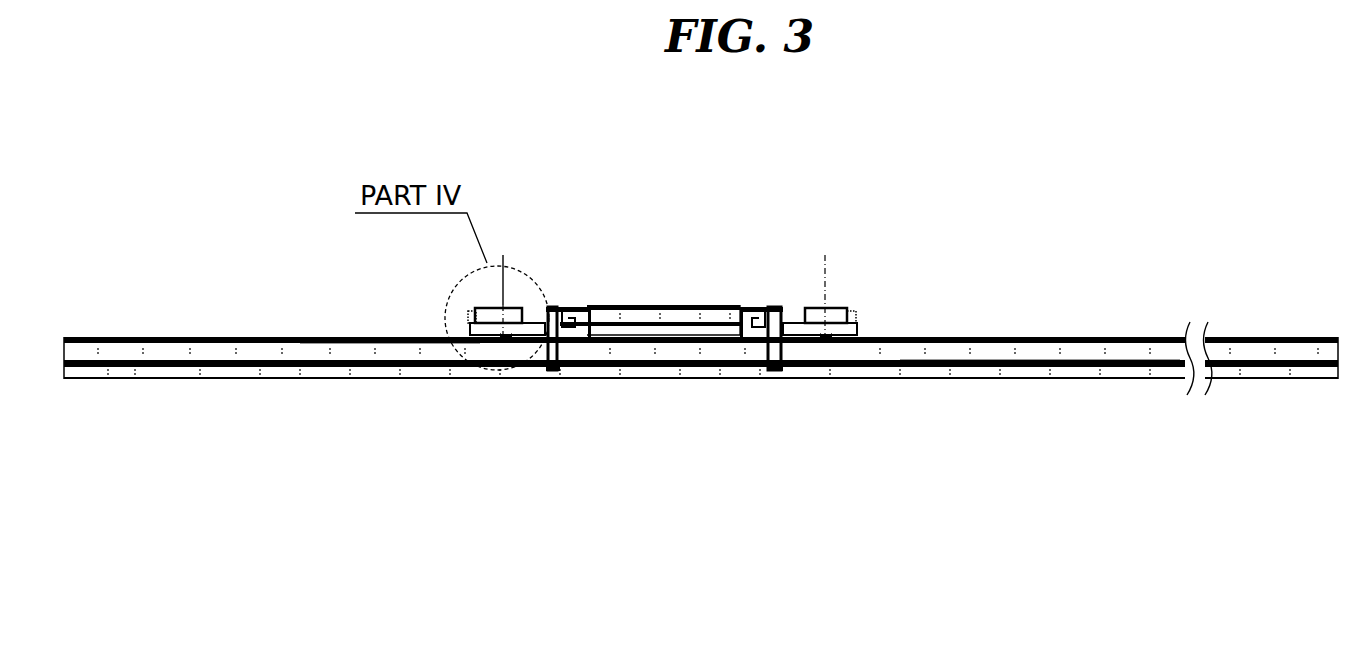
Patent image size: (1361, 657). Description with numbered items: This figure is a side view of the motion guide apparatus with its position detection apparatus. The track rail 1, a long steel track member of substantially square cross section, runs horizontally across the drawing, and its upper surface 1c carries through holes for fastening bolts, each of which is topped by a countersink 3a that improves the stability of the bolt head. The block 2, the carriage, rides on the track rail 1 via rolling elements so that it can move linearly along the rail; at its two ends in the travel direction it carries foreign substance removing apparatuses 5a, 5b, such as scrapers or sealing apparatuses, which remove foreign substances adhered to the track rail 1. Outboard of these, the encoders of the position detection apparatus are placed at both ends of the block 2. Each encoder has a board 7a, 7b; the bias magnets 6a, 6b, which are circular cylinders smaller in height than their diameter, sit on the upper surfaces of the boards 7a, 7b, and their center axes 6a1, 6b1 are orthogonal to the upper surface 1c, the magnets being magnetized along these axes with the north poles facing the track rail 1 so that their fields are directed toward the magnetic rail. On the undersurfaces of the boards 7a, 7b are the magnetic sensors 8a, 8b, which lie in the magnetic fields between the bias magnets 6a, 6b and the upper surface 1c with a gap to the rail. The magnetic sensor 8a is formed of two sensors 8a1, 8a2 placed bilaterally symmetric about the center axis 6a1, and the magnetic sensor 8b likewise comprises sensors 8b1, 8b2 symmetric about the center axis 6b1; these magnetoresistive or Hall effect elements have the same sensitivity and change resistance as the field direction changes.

The track rail 1 is at (310, 337).
The upper surface 1c is at (386, 337).
The block 2 is at (665, 305).
The countersink 3a is at (1055, 358).
The foreign substance removing apparatus 5a is at (556, 307).
The foreign substance removing apparatus 5b is at (778, 307).
The bias magnet 6a is at (489, 307).
The center axis 6a1 is at (503, 265).
The bias magnet 6b is at (820, 308).
The center axis 6b1 is at (825, 265).
The board 7a is at (507, 308).
The board 7b is at (838, 308).
The magnetic sensor 8a is at (546, 482).
The magnetic sensor 8a1 is at (478, 347).
The magnetic sensor 8a2 is at (528, 347).
The magnetic sensor 8b is at (872, 482).
The magnetic sensor 8b1 is at (800, 345).
The magnetic sensor 8b2 is at (848, 345).